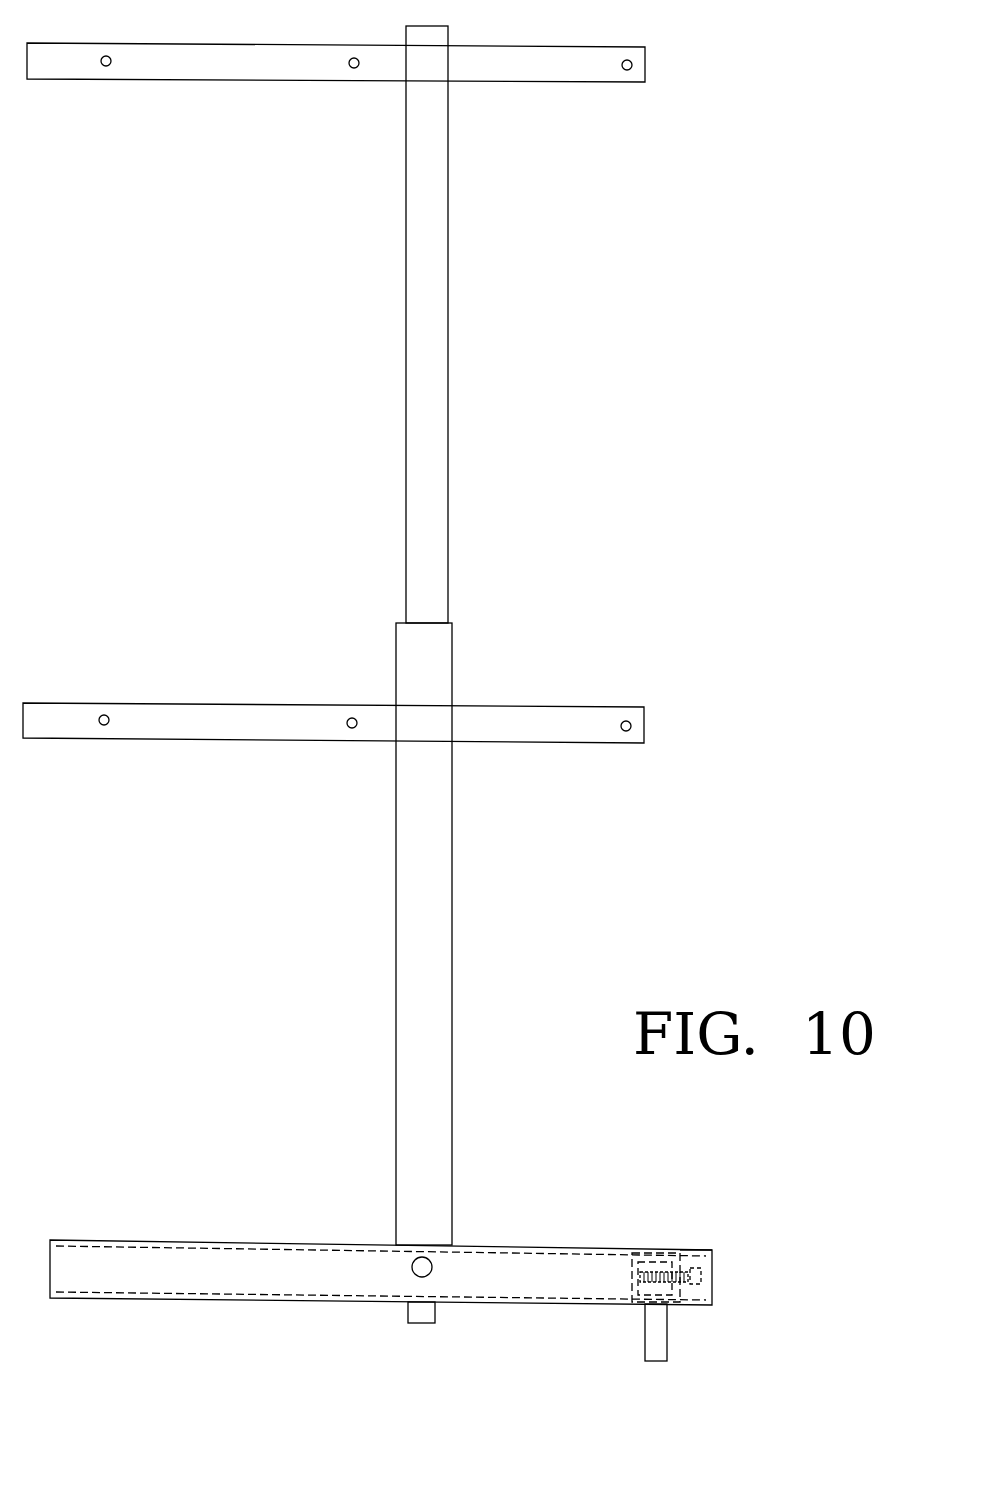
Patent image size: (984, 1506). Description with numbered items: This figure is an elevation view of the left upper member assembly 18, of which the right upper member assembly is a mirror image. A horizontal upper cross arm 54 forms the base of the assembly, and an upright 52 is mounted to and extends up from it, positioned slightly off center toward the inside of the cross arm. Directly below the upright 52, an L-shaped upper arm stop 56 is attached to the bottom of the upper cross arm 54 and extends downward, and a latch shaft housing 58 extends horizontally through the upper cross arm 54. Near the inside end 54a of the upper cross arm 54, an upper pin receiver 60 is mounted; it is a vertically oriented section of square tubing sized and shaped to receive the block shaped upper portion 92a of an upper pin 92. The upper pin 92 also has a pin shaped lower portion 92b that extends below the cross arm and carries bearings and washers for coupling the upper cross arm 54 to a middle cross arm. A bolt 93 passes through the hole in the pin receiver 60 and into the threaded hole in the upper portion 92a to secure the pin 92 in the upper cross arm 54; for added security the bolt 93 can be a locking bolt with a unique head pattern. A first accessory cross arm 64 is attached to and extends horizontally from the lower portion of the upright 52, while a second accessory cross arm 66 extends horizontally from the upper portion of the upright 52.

The left upper member assembly 18 is at (655, 300).
The upright 52 is at (445, 651).
The upper cross arm 54 is at (247, 1258).
The inside end of upper cross arm 54a is at (713, 1265).
The upper arm stop 56 is at (407, 1313).
The latch shaft housing 58 is at (412, 1265).
The upper pin receiver 60 is at (630, 1277).
The first accessory cross arm 64 is at (577, 714).
The second accessory cross arm 66 is at (563, 72).
The upper pin 92 is at (703, 1212).
The block shaped upper portion of upper pin 92a is at (657, 1267).
The pin shaped lower portion of upper pin 92b is at (648, 1328).
The bolt 93 is at (700, 1282).